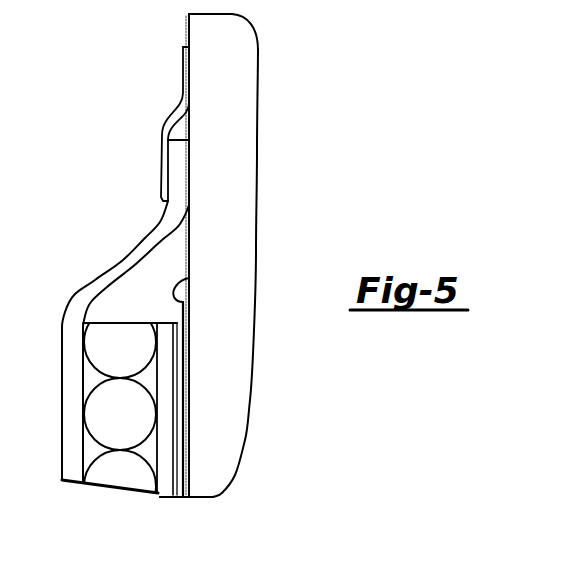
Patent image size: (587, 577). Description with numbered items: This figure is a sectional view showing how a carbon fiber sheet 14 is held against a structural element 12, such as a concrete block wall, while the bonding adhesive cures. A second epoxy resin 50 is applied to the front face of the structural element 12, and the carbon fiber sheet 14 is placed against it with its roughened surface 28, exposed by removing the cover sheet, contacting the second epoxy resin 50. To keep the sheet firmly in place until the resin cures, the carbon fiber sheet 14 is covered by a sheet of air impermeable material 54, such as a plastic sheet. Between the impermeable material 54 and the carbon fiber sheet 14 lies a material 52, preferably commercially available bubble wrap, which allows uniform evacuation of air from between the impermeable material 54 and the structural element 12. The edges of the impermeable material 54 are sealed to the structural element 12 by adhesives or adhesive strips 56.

The structural element 12 is at (240, 112).
The carbon fiber sheet 14 is at (167, 487).
The roughened surface 28 is at (183, 373).
The second epoxy resin 50 is at (193, 277).
The material for uniform air evacuation 52 is at (117, 340).
The air impermeable material 54 is at (125, 257).
The adhesive strips 56 is at (172, 113).